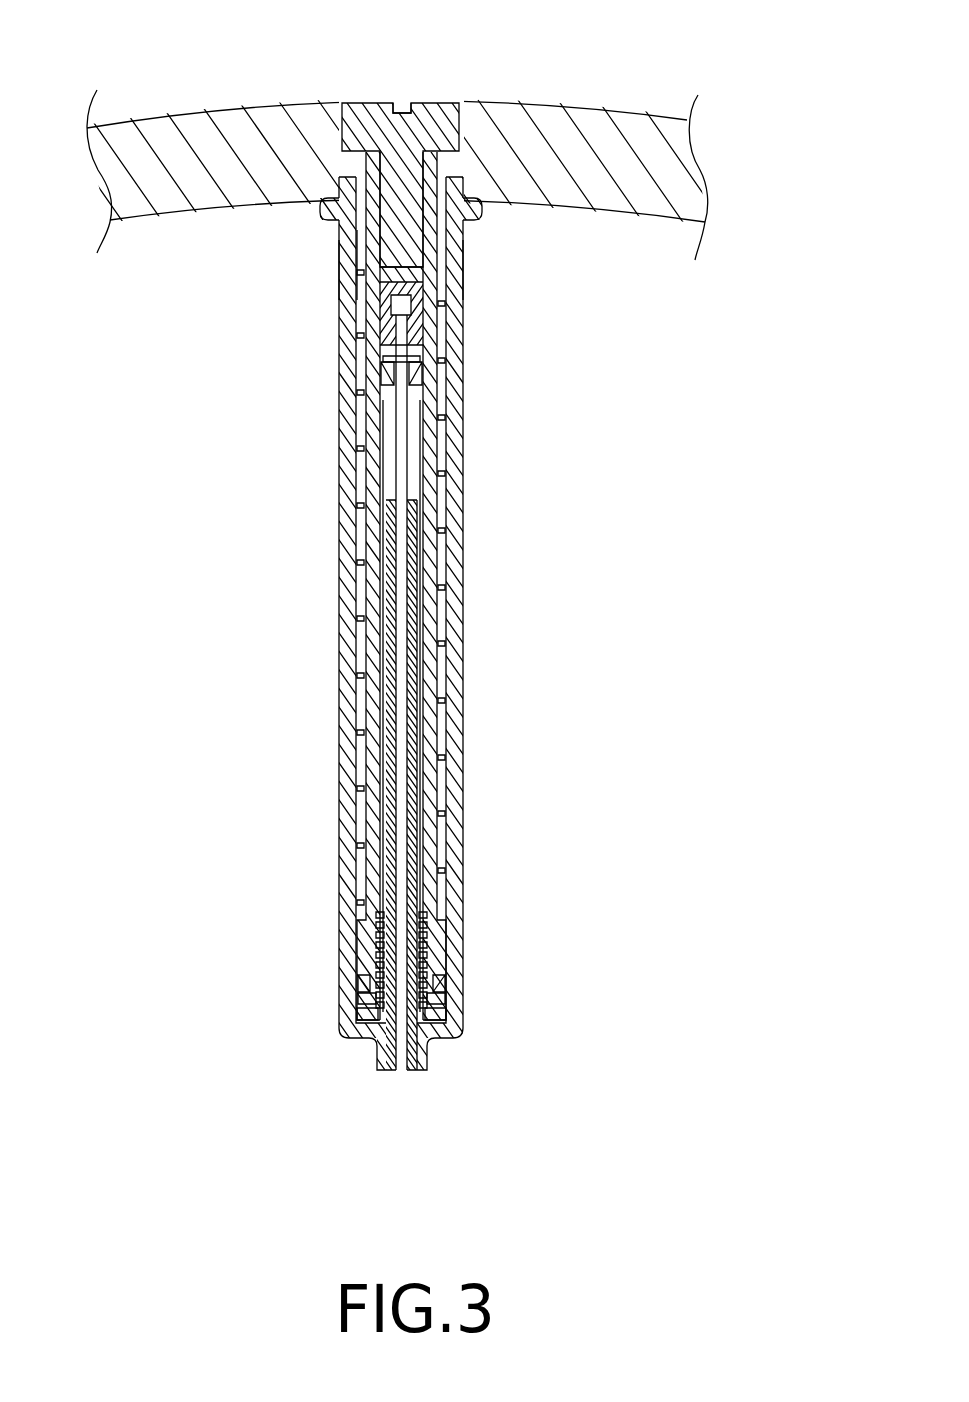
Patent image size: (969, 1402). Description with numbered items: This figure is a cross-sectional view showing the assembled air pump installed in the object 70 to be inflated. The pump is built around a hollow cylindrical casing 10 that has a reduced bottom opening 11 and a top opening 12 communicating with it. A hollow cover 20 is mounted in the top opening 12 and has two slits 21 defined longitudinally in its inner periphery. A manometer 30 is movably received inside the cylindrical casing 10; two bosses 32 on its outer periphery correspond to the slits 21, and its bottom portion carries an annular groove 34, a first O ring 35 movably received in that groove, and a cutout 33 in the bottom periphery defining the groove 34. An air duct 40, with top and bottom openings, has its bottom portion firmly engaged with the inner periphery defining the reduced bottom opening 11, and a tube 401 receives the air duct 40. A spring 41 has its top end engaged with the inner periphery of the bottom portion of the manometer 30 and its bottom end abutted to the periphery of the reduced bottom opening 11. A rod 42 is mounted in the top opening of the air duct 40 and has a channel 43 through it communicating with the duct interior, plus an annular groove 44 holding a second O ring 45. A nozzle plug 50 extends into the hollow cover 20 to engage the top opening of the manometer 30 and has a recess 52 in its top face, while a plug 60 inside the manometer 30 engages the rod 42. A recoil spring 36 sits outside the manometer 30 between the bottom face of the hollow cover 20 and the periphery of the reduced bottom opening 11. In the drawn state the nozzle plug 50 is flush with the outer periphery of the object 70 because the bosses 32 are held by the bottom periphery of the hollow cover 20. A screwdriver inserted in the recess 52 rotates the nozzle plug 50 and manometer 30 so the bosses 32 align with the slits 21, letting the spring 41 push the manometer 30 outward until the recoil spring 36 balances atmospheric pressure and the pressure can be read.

The cylindrical casing 10 is at (460, 660).
The reduced bottom opening 11 is at (423, 1060).
The top opening 12 is at (462, 225).
The hollow cover 20 is at (465, 182).
The slits 21 is at (357, 260).
The manometer 30 is at (420, 455).
The bosses 32 is at (340, 267).
The cutout 33 is at (440, 1008).
The groove 34 is at (358, 1007).
The first O ring 35 is at (360, 985).
The recoil spring 36 is at (441, 527).
The air duct 40 is at (412, 707).
The tube 401 is at (415, 595).
The spring 41 is at (423, 942).
The rod 42 is at (390, 307).
The channel 43 is at (400, 360).
The annular groove 44 is at (410, 369).
The second O ring 45 is at (420, 378).
The nozzle plug 50 is at (447, 128).
The recess 52 is at (405, 105).
The plug 60 is at (420, 323).
The object 70 is at (172, 123).